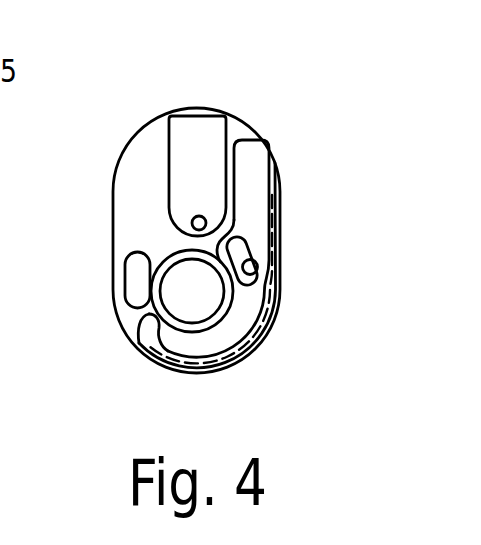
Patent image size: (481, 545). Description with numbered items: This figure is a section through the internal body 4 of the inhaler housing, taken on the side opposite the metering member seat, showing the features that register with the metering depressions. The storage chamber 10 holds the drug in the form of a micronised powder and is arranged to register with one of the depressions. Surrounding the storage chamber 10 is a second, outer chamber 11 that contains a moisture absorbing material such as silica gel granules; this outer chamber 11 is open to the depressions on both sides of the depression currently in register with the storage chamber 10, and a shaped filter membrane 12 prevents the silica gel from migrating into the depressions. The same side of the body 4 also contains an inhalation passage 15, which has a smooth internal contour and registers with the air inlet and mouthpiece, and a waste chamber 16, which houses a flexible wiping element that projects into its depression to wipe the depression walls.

The internal body 4 is at (128, 208).
The storage chamber 10 is at (250, 267).
The second, outer chamber 11 is at (248, 172).
The shaped filter membrane 12 is at (175, 347).
The inhalation passage 15 is at (204, 134).
The waste chamber 16 is at (133, 277).